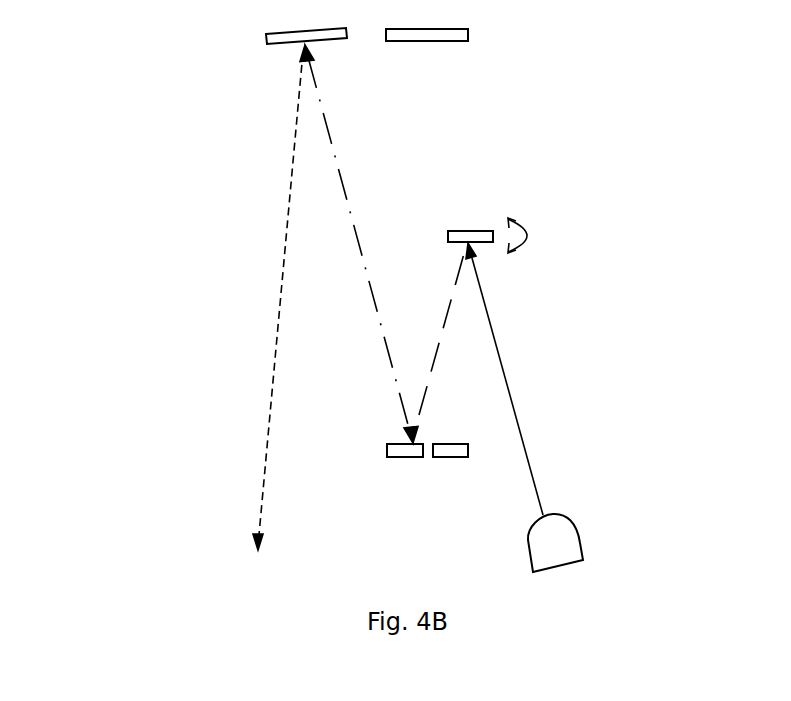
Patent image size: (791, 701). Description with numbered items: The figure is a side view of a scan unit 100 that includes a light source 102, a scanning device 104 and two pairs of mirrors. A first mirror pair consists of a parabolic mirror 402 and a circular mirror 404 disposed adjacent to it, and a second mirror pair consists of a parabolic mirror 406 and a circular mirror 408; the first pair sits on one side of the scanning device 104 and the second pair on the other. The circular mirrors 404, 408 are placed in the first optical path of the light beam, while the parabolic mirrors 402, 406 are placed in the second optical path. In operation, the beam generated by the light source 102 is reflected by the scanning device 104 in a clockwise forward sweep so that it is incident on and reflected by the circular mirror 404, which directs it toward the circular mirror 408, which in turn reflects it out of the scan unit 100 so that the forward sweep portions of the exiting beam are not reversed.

The scan unit 100 is at (89, 40).
The light source 102 is at (557, 567).
The scanning device 104 is at (480, 225).
The parabolic mirror 402 is at (445, 459).
The circular mirror 404 is at (405, 459).
The parabolic mirror 406 is at (453, 41).
The circular mirror 408 is at (277, 52).